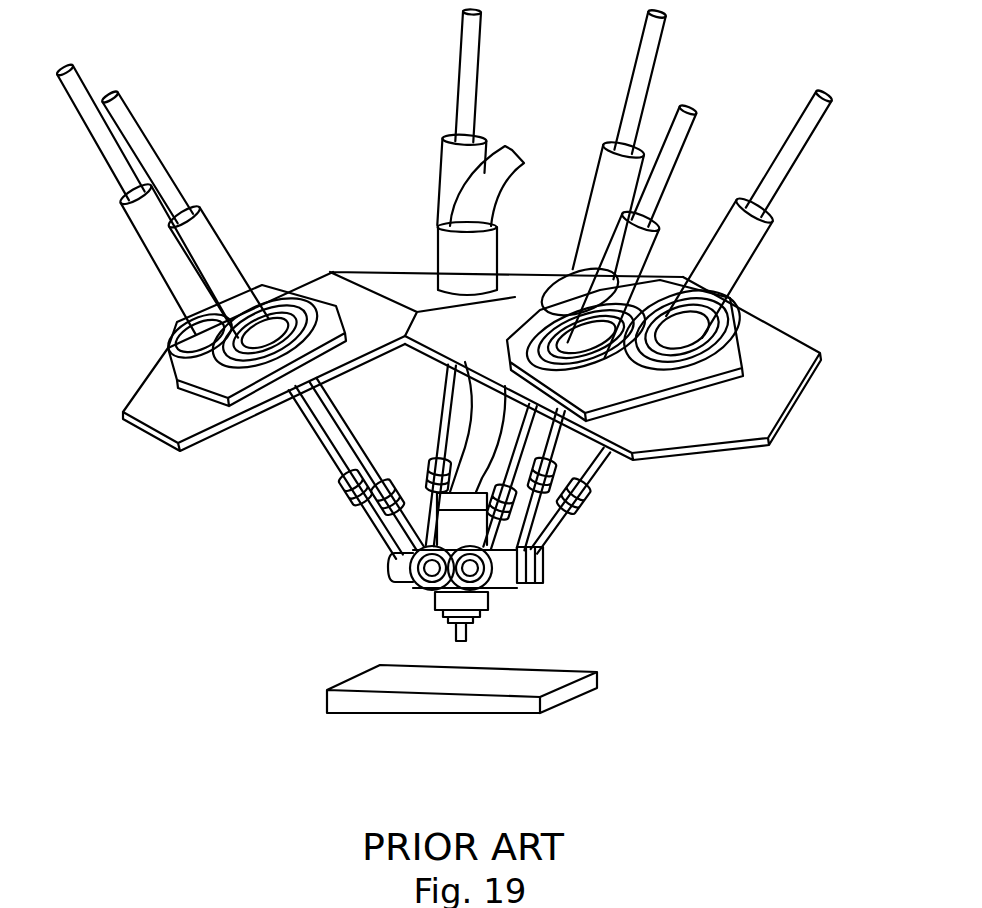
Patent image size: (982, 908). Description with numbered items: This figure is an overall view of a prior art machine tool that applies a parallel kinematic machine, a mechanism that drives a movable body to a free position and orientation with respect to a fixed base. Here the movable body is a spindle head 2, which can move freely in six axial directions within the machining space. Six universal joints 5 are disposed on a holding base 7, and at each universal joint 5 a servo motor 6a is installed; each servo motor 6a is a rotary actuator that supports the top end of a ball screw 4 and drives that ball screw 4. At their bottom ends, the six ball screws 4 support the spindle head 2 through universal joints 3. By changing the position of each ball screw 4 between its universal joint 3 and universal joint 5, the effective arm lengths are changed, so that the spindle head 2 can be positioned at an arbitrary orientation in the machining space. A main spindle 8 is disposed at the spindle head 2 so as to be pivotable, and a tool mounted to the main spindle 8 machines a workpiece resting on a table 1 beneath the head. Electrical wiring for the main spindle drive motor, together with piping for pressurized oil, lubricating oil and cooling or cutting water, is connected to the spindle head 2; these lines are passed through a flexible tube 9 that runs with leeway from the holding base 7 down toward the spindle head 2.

The table 1 is at (470, 687).
The spindle head 2 is at (517, 583).
The universal joint 3 is at (532, 575).
The ball screw 4 is at (335, 445).
The universal joint 5 is at (733, 347).
The servo motor 6a is at (197, 197).
The holding base 7 is at (377, 278).
The main spindle 8 is at (462, 618).
The flexible tube 9 is at (477, 455).